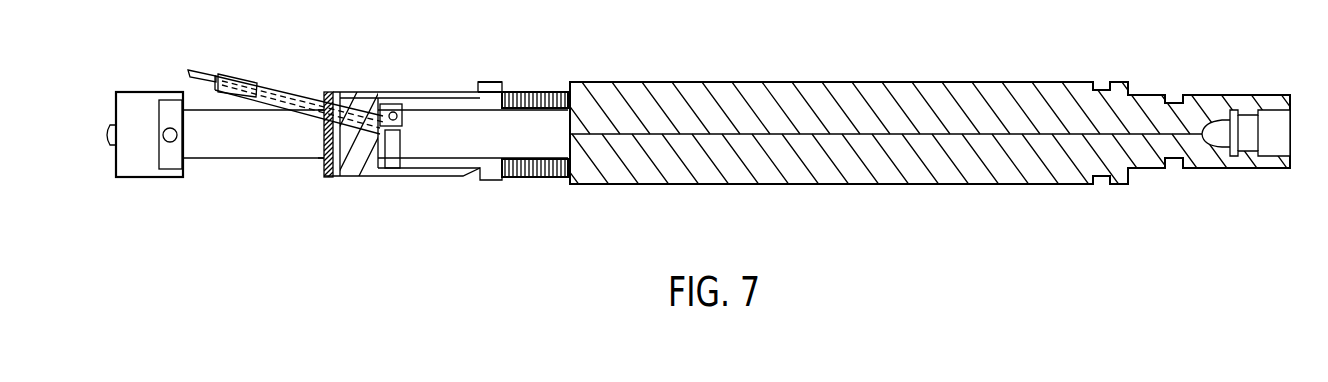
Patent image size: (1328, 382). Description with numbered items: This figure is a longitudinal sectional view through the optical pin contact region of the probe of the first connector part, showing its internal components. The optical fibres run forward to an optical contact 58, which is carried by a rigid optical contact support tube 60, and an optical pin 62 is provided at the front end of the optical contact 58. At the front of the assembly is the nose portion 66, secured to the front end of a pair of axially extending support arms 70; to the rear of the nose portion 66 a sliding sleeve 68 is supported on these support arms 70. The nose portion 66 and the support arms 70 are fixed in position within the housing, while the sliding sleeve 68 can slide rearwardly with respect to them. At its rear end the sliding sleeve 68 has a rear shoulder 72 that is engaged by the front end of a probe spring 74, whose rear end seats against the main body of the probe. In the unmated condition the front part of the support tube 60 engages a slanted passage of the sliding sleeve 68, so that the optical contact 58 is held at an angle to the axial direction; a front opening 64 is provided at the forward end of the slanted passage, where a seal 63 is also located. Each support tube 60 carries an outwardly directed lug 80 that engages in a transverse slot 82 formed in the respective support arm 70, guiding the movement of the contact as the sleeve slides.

The optical contact 58 is at (188, 72).
The optical contact support tube 60 is at (302, 93).
The optical pin 62 is at (198, 78).
The seal 63 is at (323, 142).
The front opening 64 is at (340, 98).
The nose portion 66 is at (135, 160).
The sliding sleeve 68 is at (358, 166).
The support arm 70 is at (250, 137).
The rear shoulder 72 is at (491, 82).
The probe spring 74 is at (535, 92).
The lug 80 is at (397, 110).
The transverse slot 82 is at (393, 147).